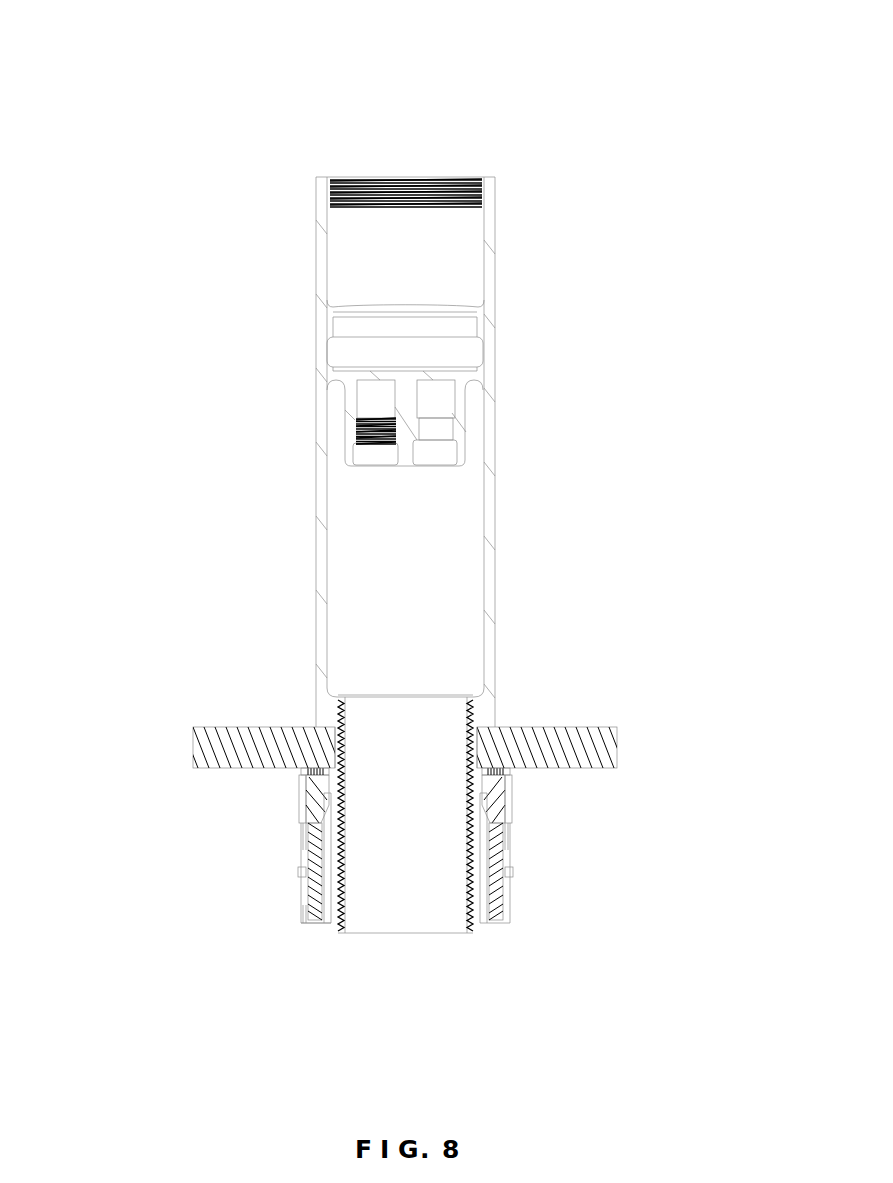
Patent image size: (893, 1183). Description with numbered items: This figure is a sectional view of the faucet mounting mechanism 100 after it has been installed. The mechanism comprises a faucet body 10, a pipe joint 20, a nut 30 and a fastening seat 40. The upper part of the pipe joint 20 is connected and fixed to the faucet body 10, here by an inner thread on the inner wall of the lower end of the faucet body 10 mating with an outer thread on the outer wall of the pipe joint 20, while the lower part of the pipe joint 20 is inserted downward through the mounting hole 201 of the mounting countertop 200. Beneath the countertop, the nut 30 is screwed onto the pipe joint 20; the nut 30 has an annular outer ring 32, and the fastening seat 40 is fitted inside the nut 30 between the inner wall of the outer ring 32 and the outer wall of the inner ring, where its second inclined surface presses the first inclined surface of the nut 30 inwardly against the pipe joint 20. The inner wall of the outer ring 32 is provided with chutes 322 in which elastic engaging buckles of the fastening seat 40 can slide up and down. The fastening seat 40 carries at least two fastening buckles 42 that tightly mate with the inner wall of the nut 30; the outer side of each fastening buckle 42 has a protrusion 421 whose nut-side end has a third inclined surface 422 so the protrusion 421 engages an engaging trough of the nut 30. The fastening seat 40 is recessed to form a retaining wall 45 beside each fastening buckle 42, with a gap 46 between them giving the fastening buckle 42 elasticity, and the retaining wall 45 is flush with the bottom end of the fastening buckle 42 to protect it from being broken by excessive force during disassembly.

The faucet mounting mechanism 100 is at (660, 178).
The faucet body 10 is at (323, 548).
The pipe joint 20 is at (476, 715).
The mounting countertop 200 is at (210, 743).
The mounting hole 201 is at (333, 742).
The nut 30 is at (513, 795).
The outer ring 32 is at (300, 785).
The chutes 322 is at (512, 845).
The fastening seat 40 is at (487, 907).
The fastening buckles 42 is at (310, 897).
The protrusion 421 is at (298, 865).
The third inclined surface 422 is at (297, 862).
The gap 46 is at (310, 917).
The retaining wall 45 is at (325, 923).